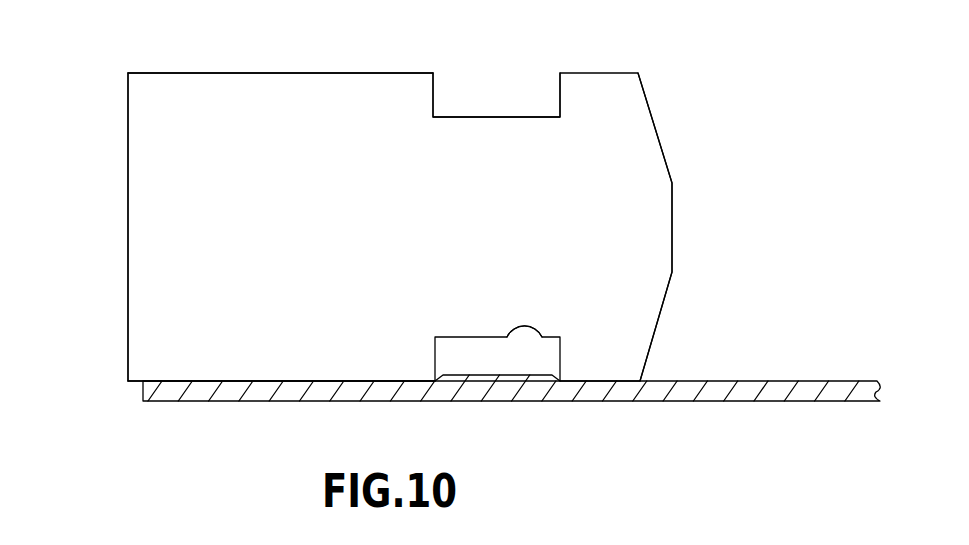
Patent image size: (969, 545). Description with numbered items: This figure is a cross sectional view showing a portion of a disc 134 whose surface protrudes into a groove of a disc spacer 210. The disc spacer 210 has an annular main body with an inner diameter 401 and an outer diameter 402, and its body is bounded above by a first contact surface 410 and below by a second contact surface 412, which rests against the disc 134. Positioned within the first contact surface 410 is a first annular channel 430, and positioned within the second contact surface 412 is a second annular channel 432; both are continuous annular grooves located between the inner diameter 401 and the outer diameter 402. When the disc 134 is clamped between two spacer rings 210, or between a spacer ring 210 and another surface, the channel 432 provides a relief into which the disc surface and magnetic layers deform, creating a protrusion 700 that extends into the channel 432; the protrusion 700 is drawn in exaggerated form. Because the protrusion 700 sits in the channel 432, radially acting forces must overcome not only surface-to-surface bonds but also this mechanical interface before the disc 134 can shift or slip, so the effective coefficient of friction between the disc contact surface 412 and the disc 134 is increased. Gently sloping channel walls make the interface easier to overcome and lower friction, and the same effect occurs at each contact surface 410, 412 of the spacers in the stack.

The disc spacer 210 is at (137, 132).
The first contact surface 410 is at (293, 73).
The first annular channel 430 is at (469, 117).
The outer diameter 402 is at (672, 240).
The inner diameter 401 is at (128, 262).
The second annular channel 432 is at (545, 337).
The protrusion 700 is at (458, 375).
The disc 134 is at (757, 381).
The second contact surface 412 is at (268, 382).